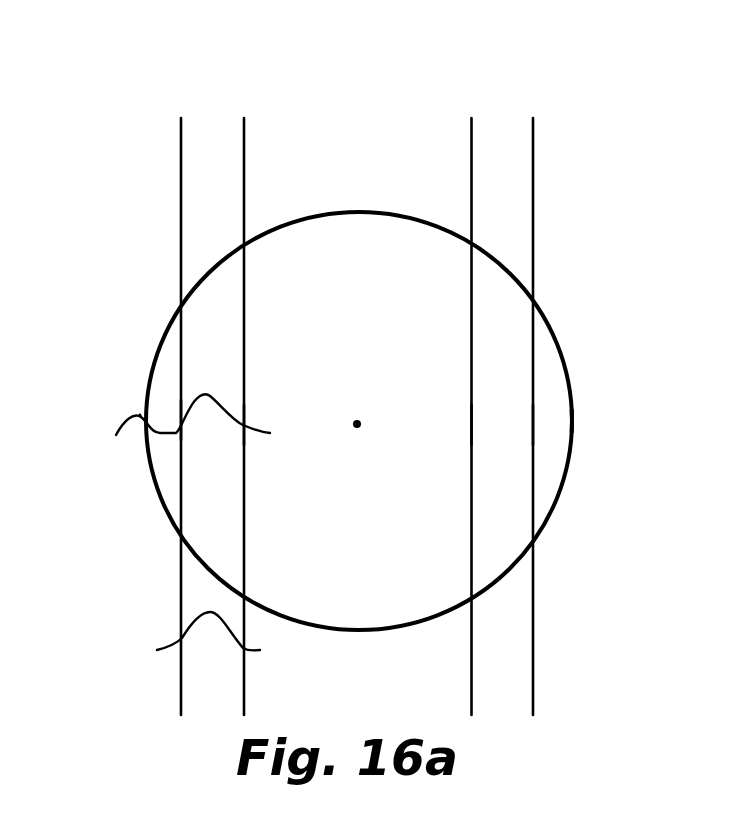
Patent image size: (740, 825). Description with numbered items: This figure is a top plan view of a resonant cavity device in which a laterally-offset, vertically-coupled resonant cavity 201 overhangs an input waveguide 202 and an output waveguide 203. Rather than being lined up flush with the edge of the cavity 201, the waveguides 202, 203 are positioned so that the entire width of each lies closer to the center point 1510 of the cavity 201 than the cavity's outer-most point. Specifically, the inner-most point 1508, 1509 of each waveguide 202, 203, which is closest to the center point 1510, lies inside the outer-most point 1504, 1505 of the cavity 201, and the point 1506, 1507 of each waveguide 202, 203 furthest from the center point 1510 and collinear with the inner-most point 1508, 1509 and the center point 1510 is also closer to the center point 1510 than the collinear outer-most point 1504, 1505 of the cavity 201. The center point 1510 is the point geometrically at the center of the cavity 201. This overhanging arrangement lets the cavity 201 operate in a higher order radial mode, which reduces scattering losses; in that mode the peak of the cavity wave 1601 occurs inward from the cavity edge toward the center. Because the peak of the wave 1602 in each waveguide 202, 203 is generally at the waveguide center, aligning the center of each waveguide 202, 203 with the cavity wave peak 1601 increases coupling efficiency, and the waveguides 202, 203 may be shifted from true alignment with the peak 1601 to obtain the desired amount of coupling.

The resonant cavity 201 is at (362, 255).
The input waveguide 202 is at (215, 133).
The output waveguide 203 is at (507, 138).
The outer-most point of the cavity 1504 is at (137, 417).
The outer-most point of the cavity 1505 is at (573, 427).
The point of the waveguide furthest from the center point 1506 is at (181, 422).
The point of the waveguide furthest from the center point 1507 is at (535, 423).
The inner-most point of the waveguide 1508 is at (243, 425).
The inner-most point of the waveguide 1509 is at (472, 425).
The center point of the cavity 1510 is at (357, 422).
The peak of the wave 1601 is at (128, 428).
The peak of the wave on each waveguide 1602 is at (167, 648).